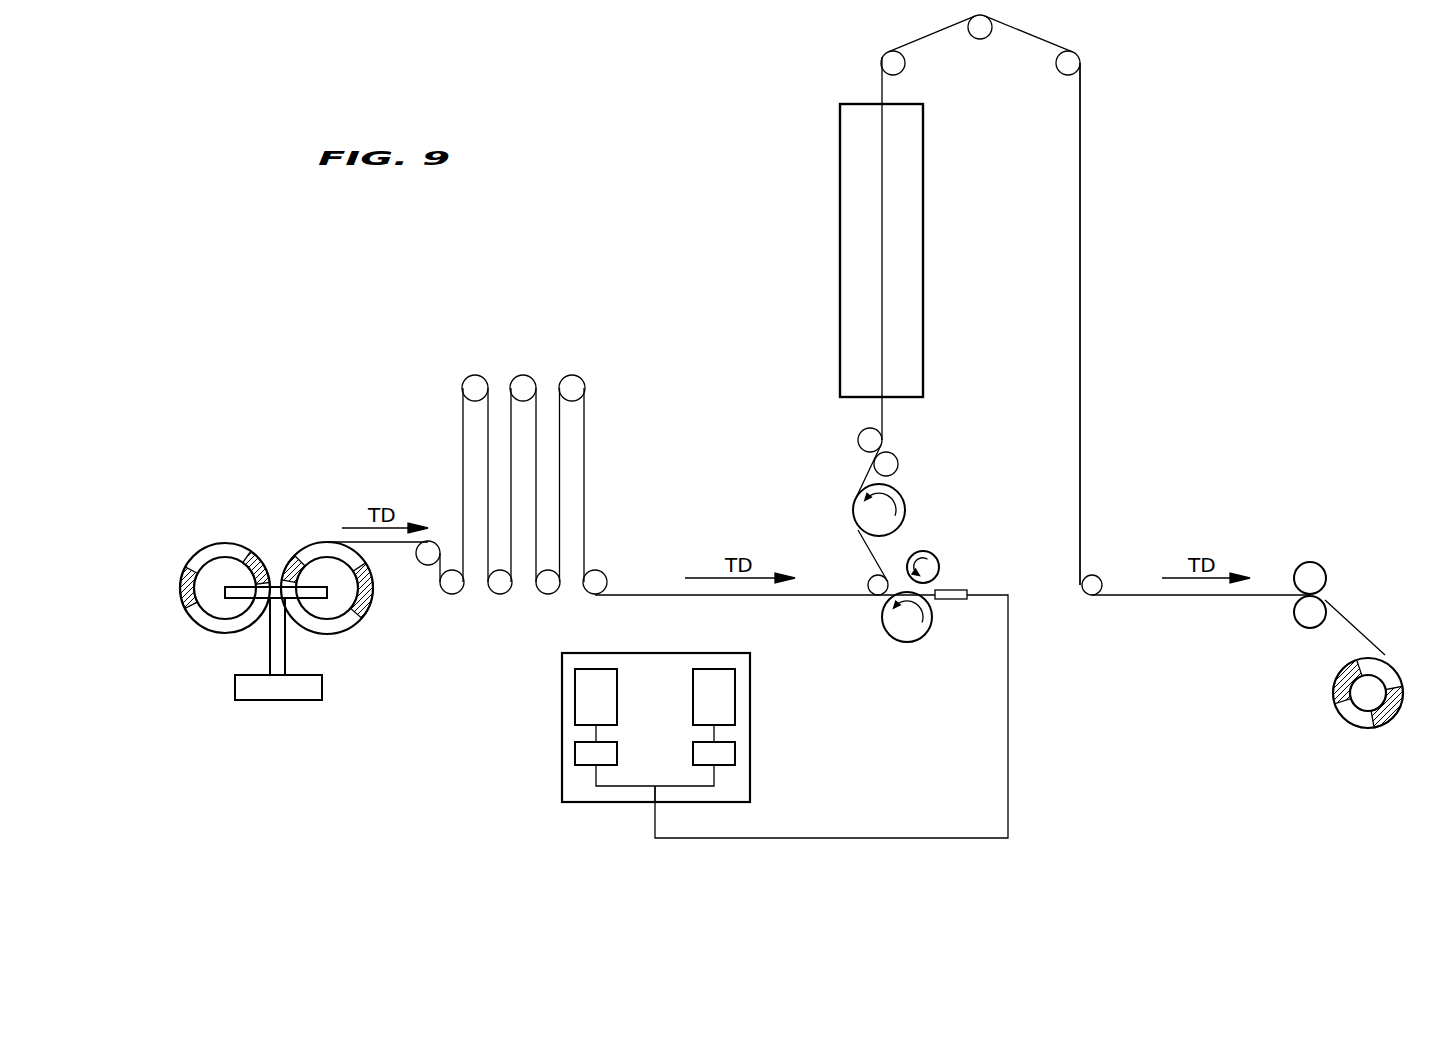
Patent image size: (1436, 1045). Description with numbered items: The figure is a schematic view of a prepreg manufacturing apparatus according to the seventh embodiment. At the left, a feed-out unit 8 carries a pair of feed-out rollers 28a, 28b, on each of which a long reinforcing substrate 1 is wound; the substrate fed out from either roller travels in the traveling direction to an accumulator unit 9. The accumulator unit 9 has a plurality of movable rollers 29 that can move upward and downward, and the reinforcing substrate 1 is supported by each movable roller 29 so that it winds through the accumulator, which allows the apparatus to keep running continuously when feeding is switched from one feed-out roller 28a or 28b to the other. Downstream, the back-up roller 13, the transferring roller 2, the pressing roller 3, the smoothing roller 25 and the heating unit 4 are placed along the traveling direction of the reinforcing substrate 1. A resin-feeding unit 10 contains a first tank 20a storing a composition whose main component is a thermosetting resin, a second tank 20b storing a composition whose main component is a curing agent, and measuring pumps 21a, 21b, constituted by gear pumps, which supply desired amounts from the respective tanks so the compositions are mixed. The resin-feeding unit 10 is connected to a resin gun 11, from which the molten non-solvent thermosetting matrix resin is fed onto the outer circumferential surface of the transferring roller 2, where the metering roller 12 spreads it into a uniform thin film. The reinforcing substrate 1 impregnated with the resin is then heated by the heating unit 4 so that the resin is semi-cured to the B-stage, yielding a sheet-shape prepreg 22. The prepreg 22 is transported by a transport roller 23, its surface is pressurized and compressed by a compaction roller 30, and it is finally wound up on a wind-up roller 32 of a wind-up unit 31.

The reinforcing substrate 1 is at (205, 632).
The transferring roller 2 is at (912, 643).
The pressing roller 3 is at (903, 507).
The heating unit 4 is at (840, 245).
The feed-out unit 8 is at (252, 552).
The accumulator unit 9 is at (578, 368).
The resin-feeding unit 10 is at (655, 770).
The resin gun 11 is at (953, 600).
The metering roller 12 is at (937, 557).
The back-up roller 13 is at (877, 597).
The first tank 20a is at (588, 695).
The second tank 20b is at (722, 695).
The measuring pump 21a is at (577, 752).
The measuring pump 21b is at (735, 752).
The sheet-shape prepreg 22 is at (1082, 170).
The transport roller 23 is at (1058, 60).
The smoothing roller 25 is at (860, 440).
The feed-out roller 28a is at (338, 600).
The feed-out roller 28b is at (220, 570).
The movable roller 29 is at (475, 388).
The compaction roller 30 is at (1312, 577).
The wind-up unit 31 is at (1320, 704).
The wind-up roller 32 is at (1367, 697).